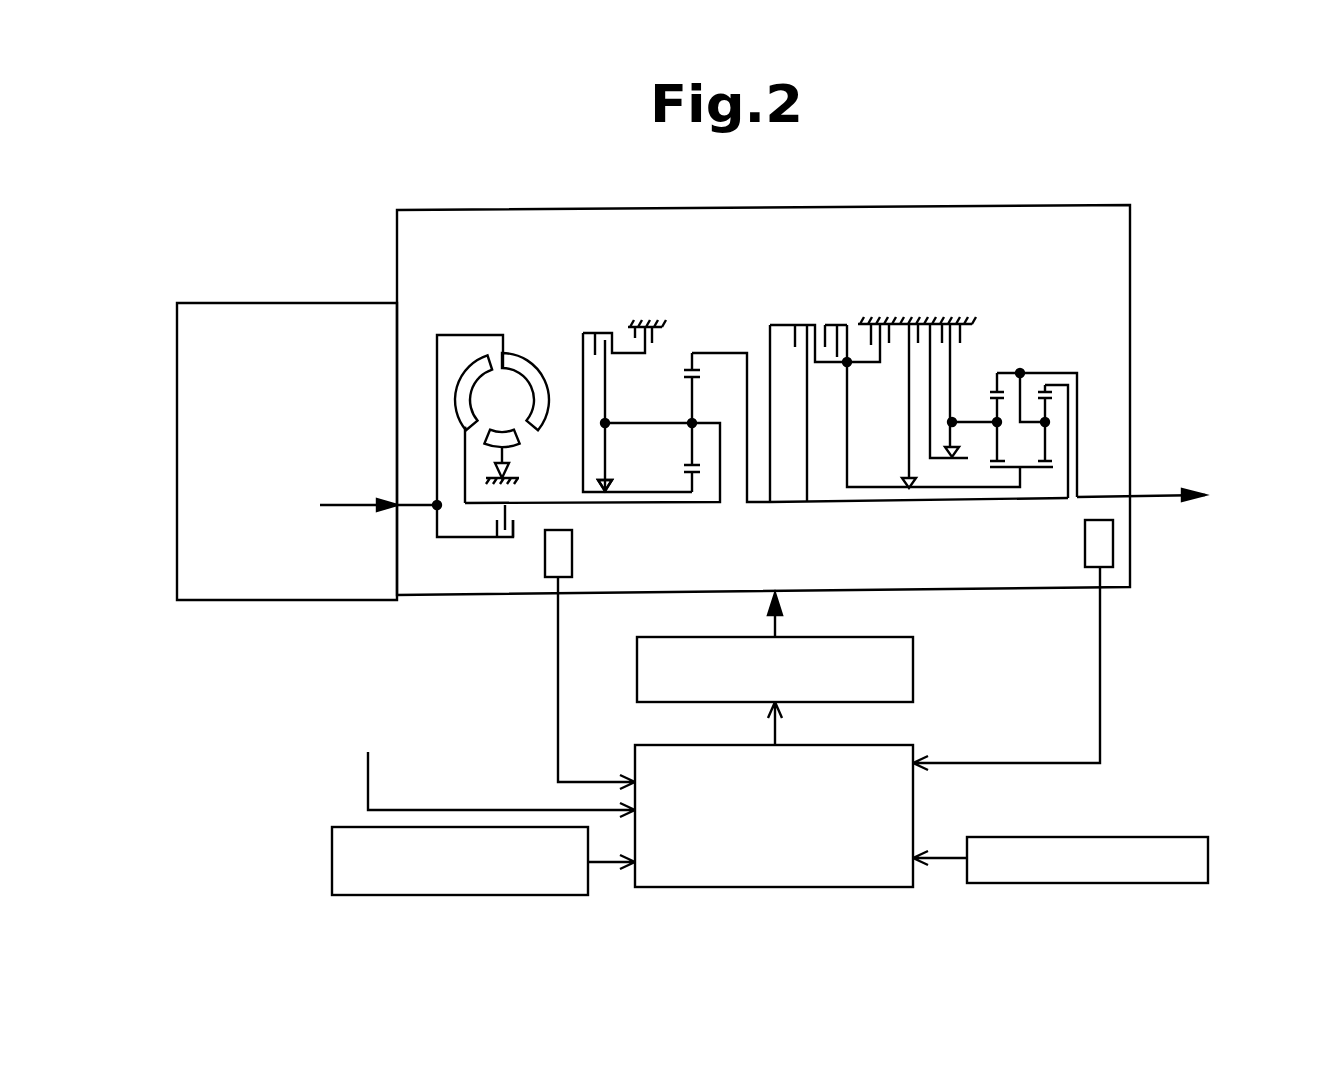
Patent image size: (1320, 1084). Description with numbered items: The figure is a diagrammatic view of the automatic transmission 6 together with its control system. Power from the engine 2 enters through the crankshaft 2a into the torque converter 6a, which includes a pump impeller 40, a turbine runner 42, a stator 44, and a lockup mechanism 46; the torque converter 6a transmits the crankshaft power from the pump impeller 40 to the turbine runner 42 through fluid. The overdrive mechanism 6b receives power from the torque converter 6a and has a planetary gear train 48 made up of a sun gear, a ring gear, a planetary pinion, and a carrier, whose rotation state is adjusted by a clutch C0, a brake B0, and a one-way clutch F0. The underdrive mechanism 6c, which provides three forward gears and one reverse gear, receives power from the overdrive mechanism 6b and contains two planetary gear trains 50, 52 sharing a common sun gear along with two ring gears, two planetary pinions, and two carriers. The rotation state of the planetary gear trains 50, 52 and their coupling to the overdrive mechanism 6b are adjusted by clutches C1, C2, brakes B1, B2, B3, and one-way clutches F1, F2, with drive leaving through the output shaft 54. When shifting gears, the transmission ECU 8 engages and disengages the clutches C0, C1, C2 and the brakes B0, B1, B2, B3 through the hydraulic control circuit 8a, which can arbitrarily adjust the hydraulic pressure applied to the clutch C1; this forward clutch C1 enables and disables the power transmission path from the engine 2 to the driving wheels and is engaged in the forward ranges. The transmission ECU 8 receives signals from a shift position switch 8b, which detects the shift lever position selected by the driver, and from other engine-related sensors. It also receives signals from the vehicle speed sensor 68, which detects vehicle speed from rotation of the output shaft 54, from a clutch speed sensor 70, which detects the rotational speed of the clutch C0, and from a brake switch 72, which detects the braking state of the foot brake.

The engine 2 is at (268, 303).
The crankshaft 2a is at (415, 509).
The automatic transmission 6 is at (397, 253).
The torque converter 6a is at (500, 389).
The overdrive mechanism 6b is at (617, 368).
The underdrive mechanism 6c is at (930, 379).
The transmission ECU 8 is at (917, 808).
The hydraulic control circuit 8a is at (915, 672).
The shift position switch 8b is at (332, 862).
The pump impeller 40 is at (533, 356).
The turbine runner 42 is at (460, 382).
The stator 44 is at (522, 444).
The lockup mechanism 46 is at (503, 540).
The planetary gear train 48 is at (705, 270).
The planetary gear train 50 is at (1011, 355).
The planetary gear train 52 is at (1070, 359).
The output shaft 54 is at (1100, 497).
The vehicle speed sensor 68 is at (1083, 542).
The clutch speed sensor 70 is at (575, 548).
The brake switch 72 is at (1195, 836).
The clutch C0 is at (603, 332).
The brake B0 is at (634, 329).
The one-way clutch F0 is at (610, 476).
The clutch C1 is at (805, 325).
The clutch C2 is at (838, 323).
The brake B1 is at (890, 344).
The brake B2 is at (922, 323).
The brake B3 is at (968, 323).
The one-way clutch F1 is at (906, 477).
The one-way clutch F2 is at (956, 446).